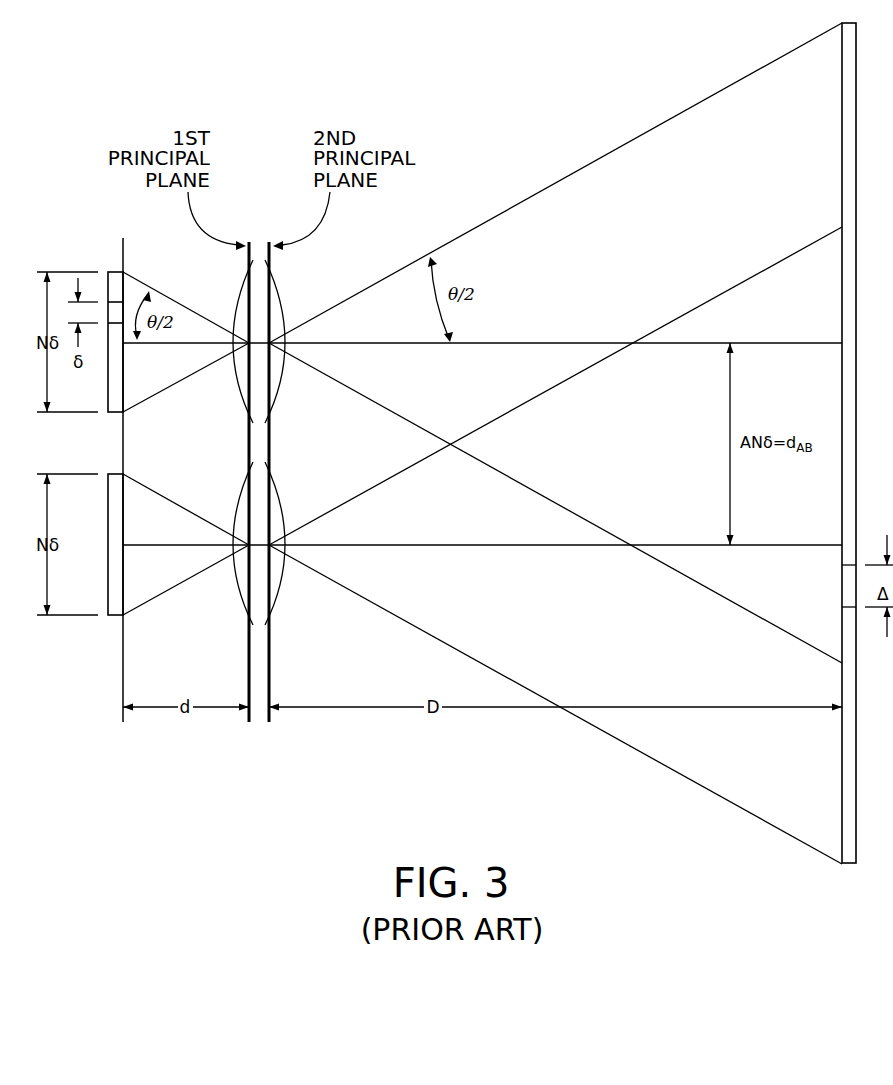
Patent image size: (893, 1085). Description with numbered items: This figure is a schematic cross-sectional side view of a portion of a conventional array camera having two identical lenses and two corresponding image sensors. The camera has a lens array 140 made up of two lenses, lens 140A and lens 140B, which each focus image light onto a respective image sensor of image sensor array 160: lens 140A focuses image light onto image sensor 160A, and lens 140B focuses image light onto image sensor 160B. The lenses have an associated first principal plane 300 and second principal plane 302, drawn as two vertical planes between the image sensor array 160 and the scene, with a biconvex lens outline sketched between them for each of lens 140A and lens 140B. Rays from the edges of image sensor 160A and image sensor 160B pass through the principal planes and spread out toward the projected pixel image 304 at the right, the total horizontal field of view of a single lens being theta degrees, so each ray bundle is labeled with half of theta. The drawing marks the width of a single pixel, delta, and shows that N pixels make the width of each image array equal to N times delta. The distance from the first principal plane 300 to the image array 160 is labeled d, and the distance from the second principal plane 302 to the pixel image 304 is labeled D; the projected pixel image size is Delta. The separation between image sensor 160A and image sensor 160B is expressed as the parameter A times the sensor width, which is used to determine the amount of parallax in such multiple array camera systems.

The lens array 140 is at (275, 463).
The lens 140A is at (275, 302).
The lens 140B is at (275, 503).
The image sensor array 160 is at (85, 470).
The image sensor 160A is at (115, 402).
The image sensor 160B is at (115, 605).
The first principal plane 300 is at (249, 725).
The second principal plane 302 is at (269, 725).
The projected pixel image 304 is at (845, 587).